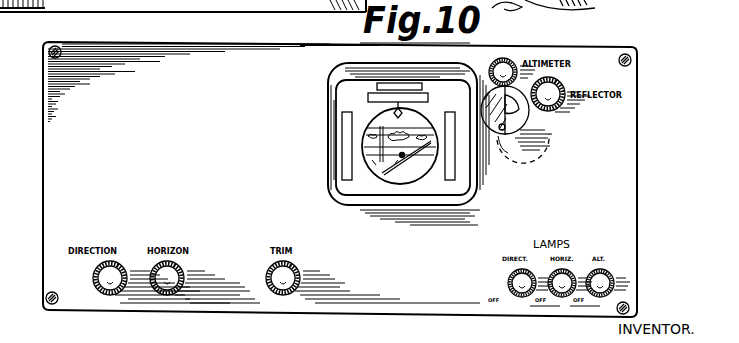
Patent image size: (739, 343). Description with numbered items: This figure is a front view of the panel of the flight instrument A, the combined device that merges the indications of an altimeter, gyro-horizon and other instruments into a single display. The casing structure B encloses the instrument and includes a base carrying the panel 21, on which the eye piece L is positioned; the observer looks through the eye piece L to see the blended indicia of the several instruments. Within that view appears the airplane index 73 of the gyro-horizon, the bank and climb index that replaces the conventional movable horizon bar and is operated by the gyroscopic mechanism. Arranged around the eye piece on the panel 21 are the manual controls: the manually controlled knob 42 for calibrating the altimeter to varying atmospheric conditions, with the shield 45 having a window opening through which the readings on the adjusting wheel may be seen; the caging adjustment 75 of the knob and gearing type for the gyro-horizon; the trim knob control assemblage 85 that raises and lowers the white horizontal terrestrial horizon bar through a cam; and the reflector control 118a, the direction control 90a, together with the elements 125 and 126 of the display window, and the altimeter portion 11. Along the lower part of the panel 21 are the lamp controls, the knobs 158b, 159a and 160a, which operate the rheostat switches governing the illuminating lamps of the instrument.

The flight instrument A is at (70, 69).
The casing structure B is at (627, 127).
The eye piece L is at (327, 80).
The altimeter mechanism 11 is at (513, 29).
The panel 21 is at (620, 157).
The manually controlled knob 42 is at (503, 70).
The shield 45 is at (508, 151).
The airplane index 73 is at (402, 157).
The caging adjustment 75 is at (167, 284).
The trim knob control assemblage 85 is at (283, 284).
The direction adjusting knob 90a is at (110, 284).
The reflector adjusting knob 118a is at (558, 88).
The horizon indicator window 125 is at (362, 134).
The indicator dial 126 is at (376, 157).
The knob for rheostat switch 158b is at (614, 284).
The knob for rheostat switch 159a is at (522, 288).
The knob for rheostat switch 160a is at (562, 288).